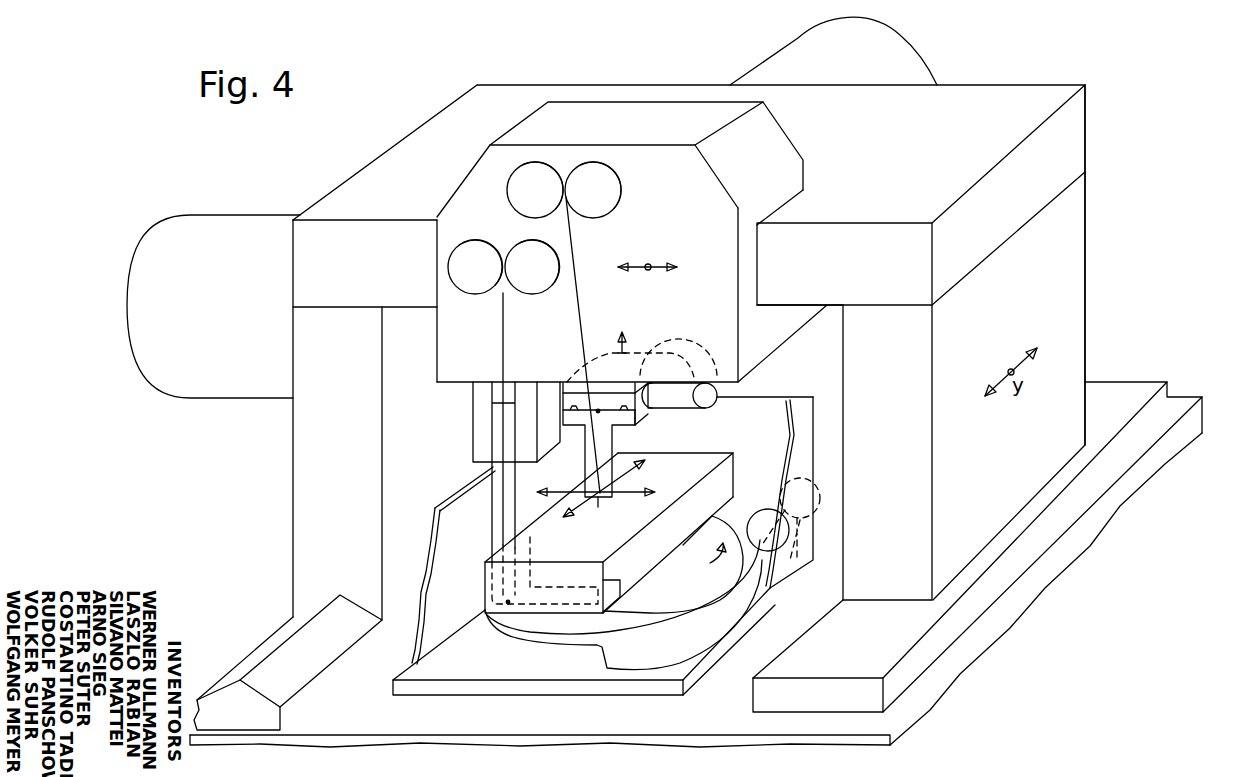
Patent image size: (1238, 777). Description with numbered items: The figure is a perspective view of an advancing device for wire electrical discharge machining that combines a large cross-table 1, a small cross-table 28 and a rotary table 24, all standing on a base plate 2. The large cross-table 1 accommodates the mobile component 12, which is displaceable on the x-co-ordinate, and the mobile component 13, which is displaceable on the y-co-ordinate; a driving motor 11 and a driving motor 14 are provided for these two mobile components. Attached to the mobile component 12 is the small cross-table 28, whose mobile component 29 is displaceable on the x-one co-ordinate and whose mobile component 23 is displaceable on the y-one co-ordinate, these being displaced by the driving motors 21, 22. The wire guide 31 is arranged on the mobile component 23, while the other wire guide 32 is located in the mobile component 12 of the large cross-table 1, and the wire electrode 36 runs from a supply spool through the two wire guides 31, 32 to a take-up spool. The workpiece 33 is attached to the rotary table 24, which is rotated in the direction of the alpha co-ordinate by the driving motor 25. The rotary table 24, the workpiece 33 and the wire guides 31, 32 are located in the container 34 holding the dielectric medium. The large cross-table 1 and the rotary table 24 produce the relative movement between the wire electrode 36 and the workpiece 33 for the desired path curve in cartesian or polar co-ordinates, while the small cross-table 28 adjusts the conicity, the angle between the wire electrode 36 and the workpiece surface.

The large cross-table 1 is at (1131, 149).
The base plate 2 is at (1190, 428).
The driving motor 11 is at (160, 218).
The mobile component 12 is at (586, 102).
The mobile component 13 is at (1048, 95).
The driving motor 14 is at (910, 46).
The driving motor 21 is at (716, 396).
The driving motor 22 is at (682, 334).
The mobile component 23 is at (640, 416).
The rotary table 24 is at (680, 613).
The driving motor 25 is at (822, 498).
The small cross-table 28 is at (705, 445).
The mobile component 29 is at (578, 381).
The wire guide 31 is at (600, 502).
The wire guide 32 is at (495, 520).
The workpiece 33 is at (728, 473).
The container 34 is at (808, 437).
The wire electrode 36 is at (503, 333).